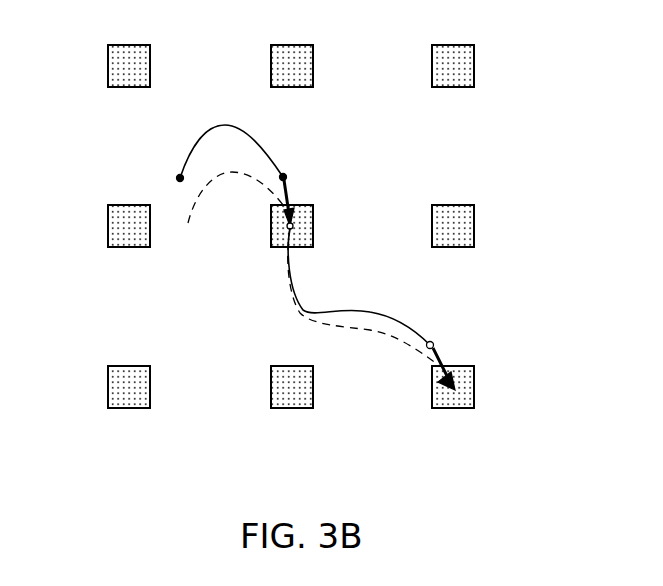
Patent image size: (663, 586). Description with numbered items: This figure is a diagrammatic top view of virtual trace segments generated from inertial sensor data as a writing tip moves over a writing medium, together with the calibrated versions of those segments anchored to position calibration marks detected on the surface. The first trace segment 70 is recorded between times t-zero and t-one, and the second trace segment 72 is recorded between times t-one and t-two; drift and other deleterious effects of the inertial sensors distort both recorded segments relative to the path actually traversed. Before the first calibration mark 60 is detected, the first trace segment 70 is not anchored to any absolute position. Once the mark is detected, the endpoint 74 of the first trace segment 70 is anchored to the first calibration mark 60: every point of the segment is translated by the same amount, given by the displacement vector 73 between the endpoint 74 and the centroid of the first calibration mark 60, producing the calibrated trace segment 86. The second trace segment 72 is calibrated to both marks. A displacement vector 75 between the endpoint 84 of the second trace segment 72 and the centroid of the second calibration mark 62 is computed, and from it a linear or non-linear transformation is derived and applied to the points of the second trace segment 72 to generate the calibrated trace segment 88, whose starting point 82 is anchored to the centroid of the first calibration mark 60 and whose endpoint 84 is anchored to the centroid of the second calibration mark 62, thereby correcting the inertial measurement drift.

The first calibration mark 60 is at (270, 247).
The second calibration mark 62 is at (433, 408).
The first trace segment 70 is at (225, 125).
The second trace segment 72 is at (372, 310).
The displacement vector 73 is at (290, 198).
The endpoint of the first trace segment 74 is at (284, 174).
The displacement vector 75 is at (442, 363).
The starting point of the second trace segment 82 is at (294, 229).
The endpoint of the second trace segment 84 is at (432, 341).
The calibrated trace segment 86 is at (207, 187).
The calibrated trace segment 88 is at (368, 332).